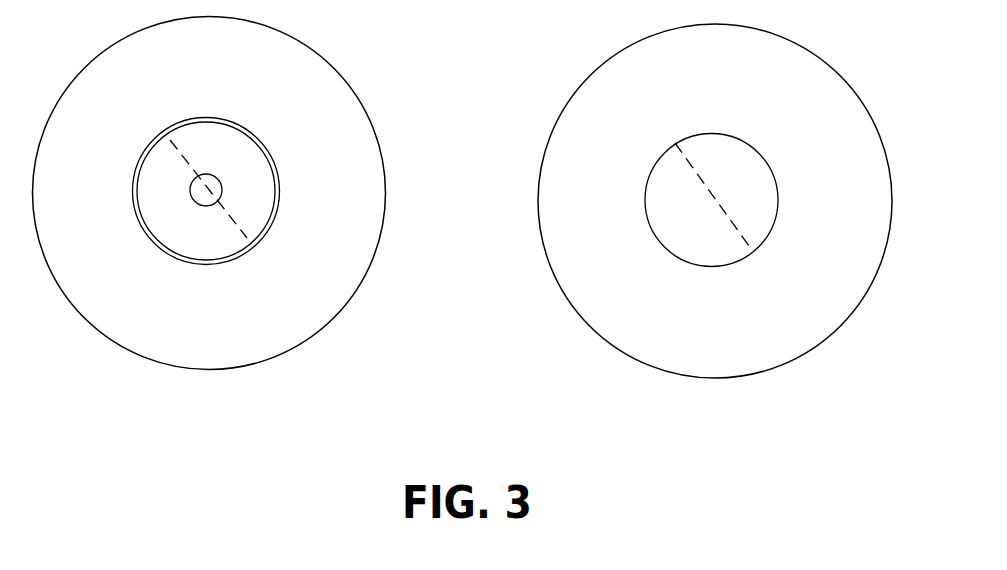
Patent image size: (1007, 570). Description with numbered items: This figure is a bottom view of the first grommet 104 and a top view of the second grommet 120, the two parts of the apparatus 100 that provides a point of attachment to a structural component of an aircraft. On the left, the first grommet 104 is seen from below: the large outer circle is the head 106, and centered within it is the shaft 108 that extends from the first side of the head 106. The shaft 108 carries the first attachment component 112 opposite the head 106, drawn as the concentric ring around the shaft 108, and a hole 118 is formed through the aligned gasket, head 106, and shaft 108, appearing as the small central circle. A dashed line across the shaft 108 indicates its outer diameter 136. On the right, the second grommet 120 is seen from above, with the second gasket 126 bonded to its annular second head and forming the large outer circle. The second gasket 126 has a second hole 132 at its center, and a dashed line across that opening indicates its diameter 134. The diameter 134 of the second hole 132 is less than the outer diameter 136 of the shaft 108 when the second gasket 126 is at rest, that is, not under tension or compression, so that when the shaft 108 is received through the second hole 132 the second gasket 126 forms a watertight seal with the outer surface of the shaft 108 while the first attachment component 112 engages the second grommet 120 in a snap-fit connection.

The apparatus 100 is at (739, 271).
The first grommet 104 is at (232, 225).
The head 106 is at (350, 122).
The shaft 108 is at (168, 162).
The first attachment component 112 is at (277, 196).
The hole 118 is at (212, 152).
The second grommet 120 is at (739, 225).
The second gasket 126 is at (855, 128).
The second hole 132 is at (701, 286).
The diameter 134 is at (710, 193).
The outer diameter 136 is at (225, 212).